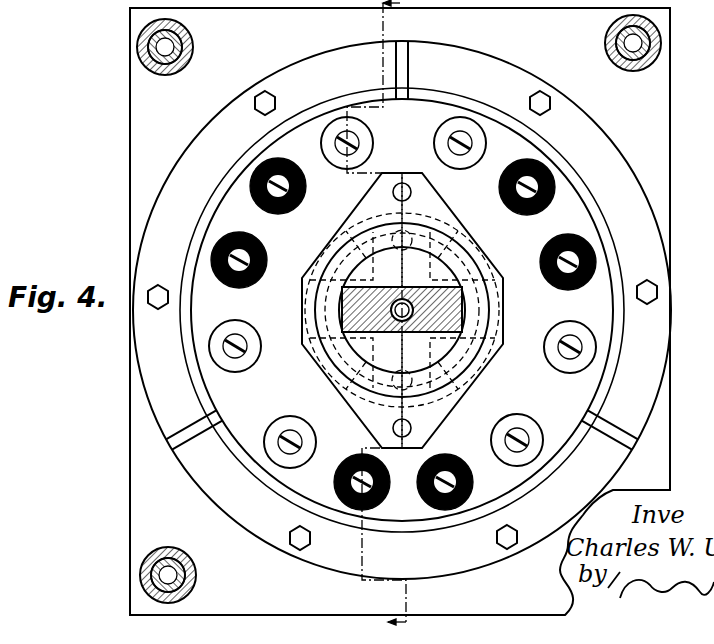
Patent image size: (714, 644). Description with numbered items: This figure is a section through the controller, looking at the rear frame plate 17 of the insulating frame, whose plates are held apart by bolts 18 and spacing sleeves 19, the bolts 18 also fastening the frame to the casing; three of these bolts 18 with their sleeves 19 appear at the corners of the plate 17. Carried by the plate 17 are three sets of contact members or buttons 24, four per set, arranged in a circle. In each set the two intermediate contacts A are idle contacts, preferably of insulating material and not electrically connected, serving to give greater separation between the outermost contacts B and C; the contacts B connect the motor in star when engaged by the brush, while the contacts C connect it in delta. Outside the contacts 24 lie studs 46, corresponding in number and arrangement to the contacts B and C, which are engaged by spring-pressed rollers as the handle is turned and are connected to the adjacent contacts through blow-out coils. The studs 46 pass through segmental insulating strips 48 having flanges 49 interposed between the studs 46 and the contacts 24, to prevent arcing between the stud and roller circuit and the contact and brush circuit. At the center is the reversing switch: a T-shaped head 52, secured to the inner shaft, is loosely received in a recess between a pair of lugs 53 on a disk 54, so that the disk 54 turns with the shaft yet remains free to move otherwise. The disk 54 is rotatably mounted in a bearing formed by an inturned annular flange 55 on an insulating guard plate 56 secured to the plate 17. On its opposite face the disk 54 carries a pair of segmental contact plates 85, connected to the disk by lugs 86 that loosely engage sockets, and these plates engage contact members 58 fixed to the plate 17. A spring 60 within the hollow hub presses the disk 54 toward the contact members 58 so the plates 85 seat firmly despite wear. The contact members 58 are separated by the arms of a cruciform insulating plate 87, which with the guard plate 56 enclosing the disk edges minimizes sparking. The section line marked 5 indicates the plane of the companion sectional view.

The rear frame plate 17 is at (655, 88).
The bolts 18 is at (158, 48).
The spacing sleeves 19 is at (142, 58).
The segmental insulating strips 48 is at (208, 140).
The flanges 49 is at (560, 160).
The studs 46 is at (262, 94).
The contact members or buttons 24 is at (401, 284).
The idle contacts A is at (251, 184).
The star contacts B is at (353, 118).
The delta contacts C is at (476, 123).
The insulating guard plate 56 is at (330, 236).
The segmental contact plates 85 is at (392, 192).
The lugs 86 is at (447, 213).
The lugs 53 is at (467, 258).
The disk 54 is at (310, 300).
The contact members 58 is at (458, 222).
The inturned annular flange 55 is at (325, 358).
The cruciform insulating plate 87 is at (318, 326).
The T-shaped head 52 is at (414, 309).
The spring 60 is at (465, 325).
The section line 5- 5 is at (376, 312).